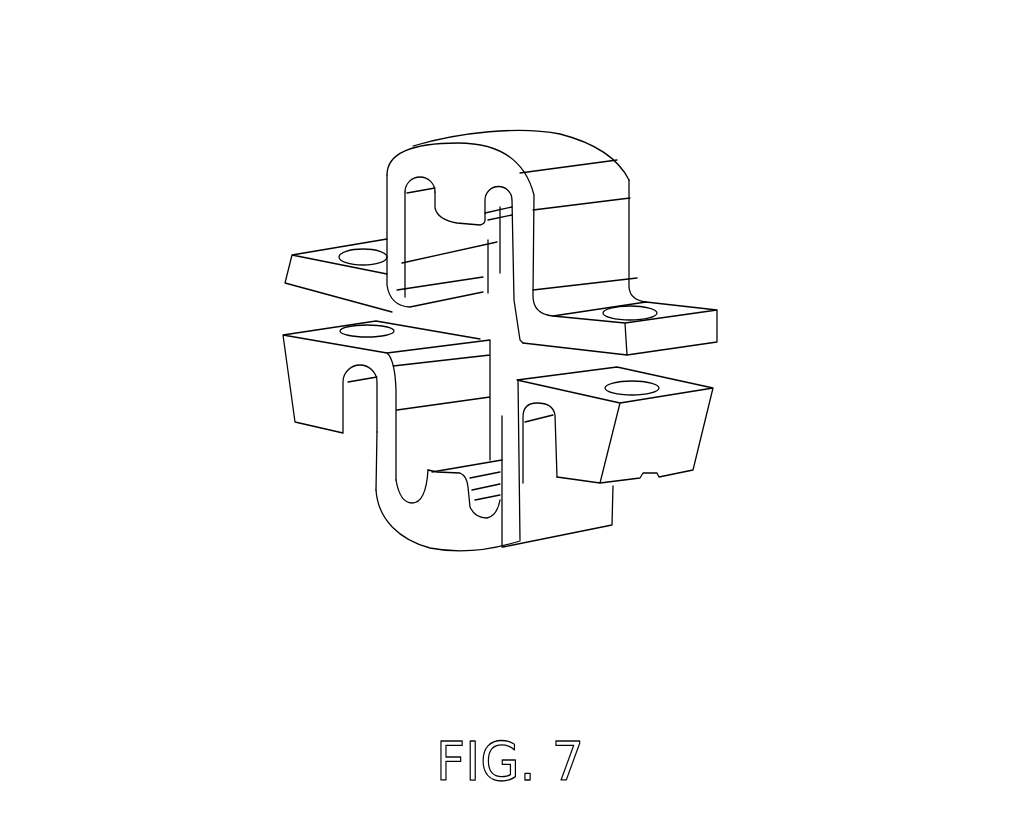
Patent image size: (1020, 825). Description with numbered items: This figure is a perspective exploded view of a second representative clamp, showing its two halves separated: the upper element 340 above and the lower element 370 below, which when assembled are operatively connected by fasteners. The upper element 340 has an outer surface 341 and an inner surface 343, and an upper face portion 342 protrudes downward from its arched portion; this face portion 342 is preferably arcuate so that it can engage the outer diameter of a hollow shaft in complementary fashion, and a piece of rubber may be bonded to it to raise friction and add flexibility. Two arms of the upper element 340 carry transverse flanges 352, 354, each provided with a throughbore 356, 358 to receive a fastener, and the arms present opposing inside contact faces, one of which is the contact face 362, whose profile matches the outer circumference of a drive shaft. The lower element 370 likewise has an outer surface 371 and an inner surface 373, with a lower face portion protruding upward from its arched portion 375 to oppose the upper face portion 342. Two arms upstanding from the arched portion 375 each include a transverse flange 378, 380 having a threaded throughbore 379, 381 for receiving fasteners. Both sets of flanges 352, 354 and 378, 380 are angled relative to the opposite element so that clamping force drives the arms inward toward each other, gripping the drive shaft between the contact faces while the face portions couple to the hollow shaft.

The upper element 340 is at (476, 205).
The outer surface 341 is at (610, 182).
The upper face portion 342 is at (508, 199).
The inner surface 343 is at (417, 200).
The transverse flange 352 is at (683, 295).
The transverse flange 354 is at (220, 212).
The throughbore 356 is at (638, 311).
The throughbore 358 is at (363, 256).
The inside contact face 362 is at (437, 292).
The lower element 370 is at (494, 476).
The outer surface 371 is at (550, 505).
The inner surface 373 is at (410, 483).
The arched portion 375 is at (443, 520).
The transverse flange 378 is at (676, 471).
The threaded throughbore 379 is at (640, 386).
The transverse flange 380 is at (284, 376).
The threaded throughbore 381 is at (366, 329).